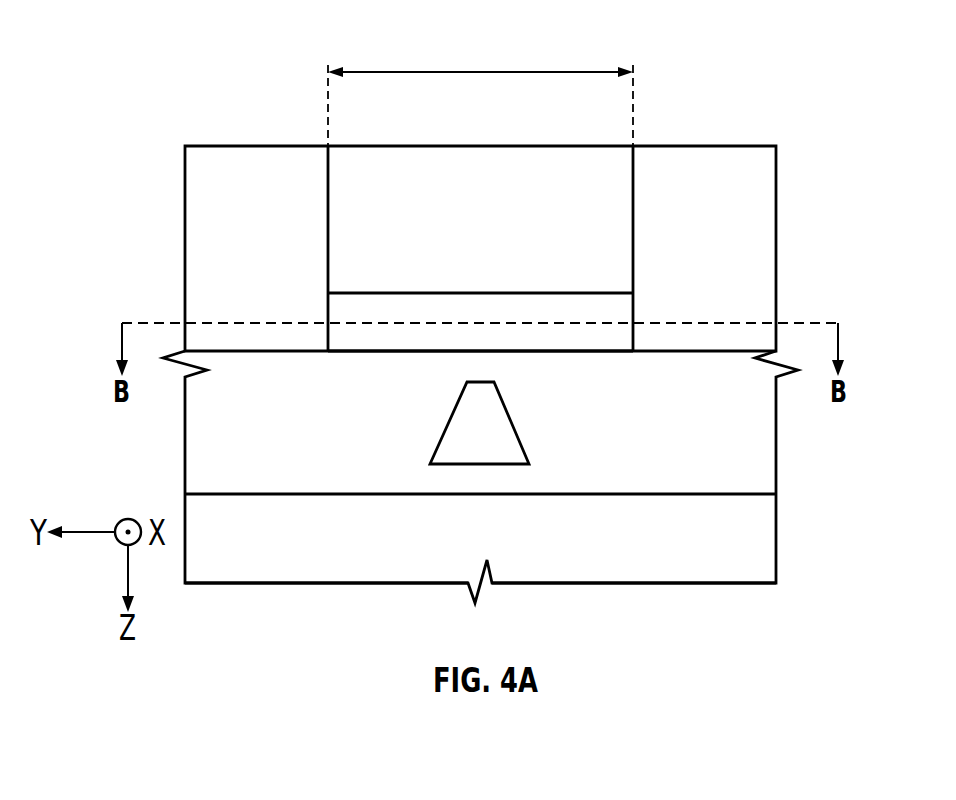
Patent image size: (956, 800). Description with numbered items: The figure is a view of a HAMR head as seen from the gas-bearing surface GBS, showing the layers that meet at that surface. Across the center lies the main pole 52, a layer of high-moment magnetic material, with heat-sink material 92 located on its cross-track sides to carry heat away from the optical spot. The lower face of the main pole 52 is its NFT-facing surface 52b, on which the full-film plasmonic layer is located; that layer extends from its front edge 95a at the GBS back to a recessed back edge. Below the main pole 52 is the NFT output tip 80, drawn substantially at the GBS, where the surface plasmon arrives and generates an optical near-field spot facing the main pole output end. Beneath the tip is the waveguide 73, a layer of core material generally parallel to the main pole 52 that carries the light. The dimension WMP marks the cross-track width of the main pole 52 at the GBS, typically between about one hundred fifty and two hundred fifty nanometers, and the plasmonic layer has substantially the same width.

The heat-sink material 92 is at (275, 178).
The main pole 52 is at (480, 167).
The NFT-facing surface of the main pole 52b is at (468, 292).
The front edge of the plasmonic layer 95a is at (417, 337).
The NFT output tip 80 is at (493, 427).
The gas-bearing surface GBS is at (735, 427).
The waveguide 73 is at (625, 560).
The cross-track width of the main pole WMP is at (478, 72).